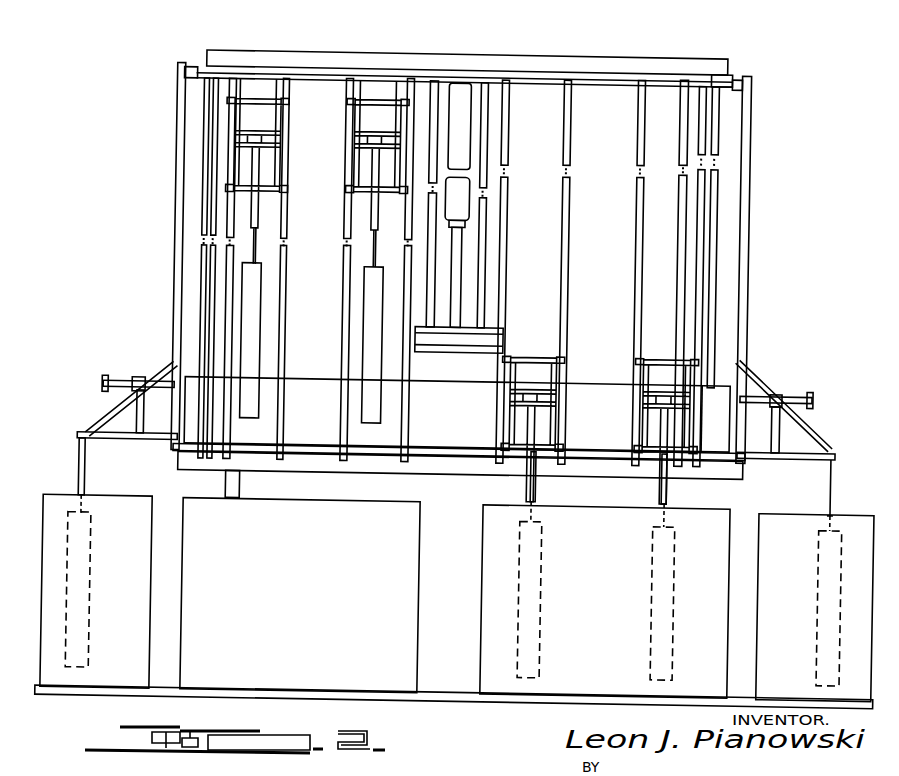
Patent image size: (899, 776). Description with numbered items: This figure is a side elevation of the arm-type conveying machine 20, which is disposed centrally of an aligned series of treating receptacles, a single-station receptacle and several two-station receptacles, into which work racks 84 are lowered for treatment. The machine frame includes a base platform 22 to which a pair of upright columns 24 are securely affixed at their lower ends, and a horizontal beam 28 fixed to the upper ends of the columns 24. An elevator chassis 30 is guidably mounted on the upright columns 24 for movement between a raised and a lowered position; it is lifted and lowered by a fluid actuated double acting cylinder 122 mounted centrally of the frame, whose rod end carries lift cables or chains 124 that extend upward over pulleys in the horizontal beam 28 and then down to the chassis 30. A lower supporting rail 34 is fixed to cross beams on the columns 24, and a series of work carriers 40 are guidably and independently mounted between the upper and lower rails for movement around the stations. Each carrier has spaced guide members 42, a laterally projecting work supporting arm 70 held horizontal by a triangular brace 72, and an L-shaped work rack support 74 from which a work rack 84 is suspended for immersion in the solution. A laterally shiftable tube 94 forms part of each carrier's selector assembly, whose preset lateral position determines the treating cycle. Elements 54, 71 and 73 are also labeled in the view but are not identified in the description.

The arm-type conveying machine 20 is at (733, 56).
The base platform 22 is at (450, 689).
The upright columns 24 is at (248, 490).
The horizontal beam 28 is at (677, 57).
The elevator chassis 30 is at (729, 391).
The lower supporting rail 34 is at (445, 459).
The work carriers 40 is at (180, 165).
The guide members 42 is at (510, 261).
The piston rod 54 is at (690, 482).
The work supporting arm 70 is at (95, 421).
The triangular brace 72 is at (120, 400).
The work rack 84 is at (380, 319).
The laterally shiftable tube 94 is at (123, 379).
The fluid actuated double acting cylinder 122 is at (458, 89).
The lift cables or chains 124 is at (208, 250).
The tank 71 is at (151, 486).
The tank 73 is at (500, 561).
The L-shaped work rack support 74 is at (788, 507).